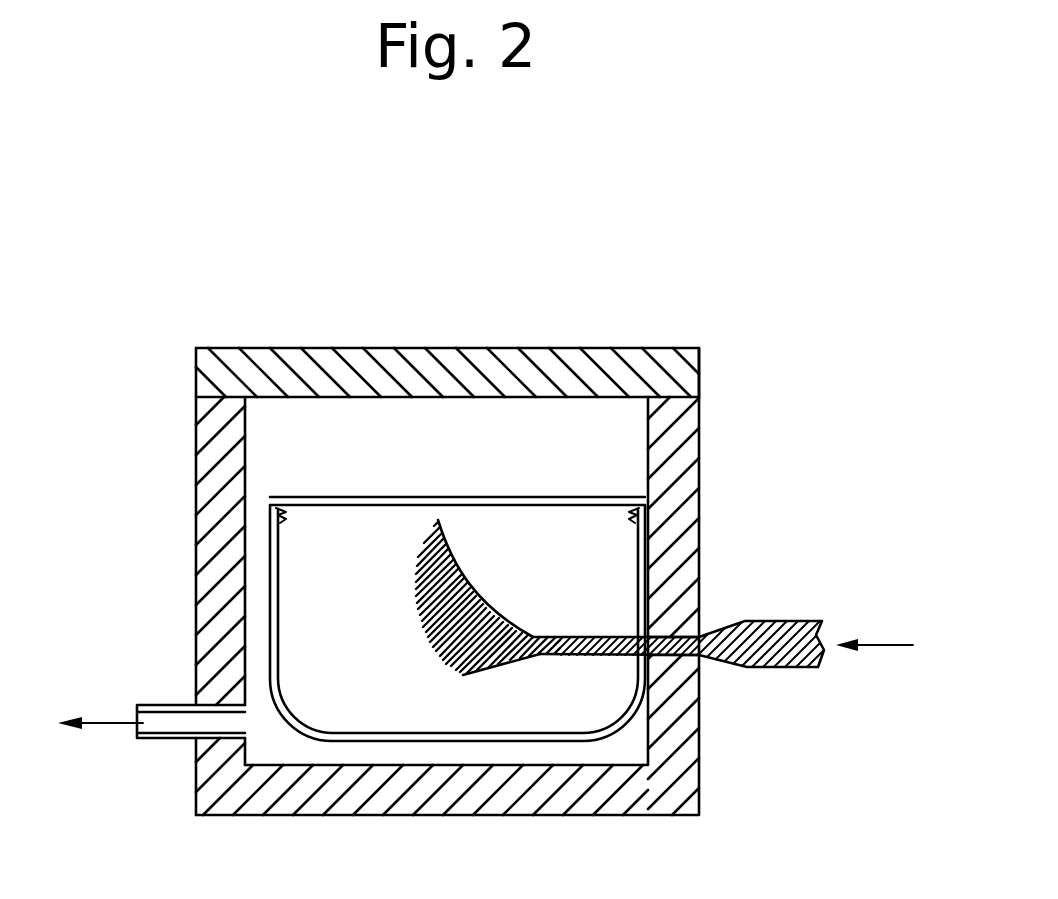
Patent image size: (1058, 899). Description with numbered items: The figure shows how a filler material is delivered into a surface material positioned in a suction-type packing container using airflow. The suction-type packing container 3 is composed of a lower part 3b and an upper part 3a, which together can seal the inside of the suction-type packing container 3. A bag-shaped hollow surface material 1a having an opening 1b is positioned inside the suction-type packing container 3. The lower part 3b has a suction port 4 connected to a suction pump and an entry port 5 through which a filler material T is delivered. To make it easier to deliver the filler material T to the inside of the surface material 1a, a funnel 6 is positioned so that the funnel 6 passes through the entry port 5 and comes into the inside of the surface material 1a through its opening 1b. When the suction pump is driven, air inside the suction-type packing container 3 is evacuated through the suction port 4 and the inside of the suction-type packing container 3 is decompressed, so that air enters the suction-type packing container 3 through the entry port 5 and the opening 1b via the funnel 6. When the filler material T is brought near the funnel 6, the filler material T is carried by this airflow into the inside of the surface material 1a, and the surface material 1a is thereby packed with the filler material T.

The surface material 1a is at (433, 742).
The opening 1b is at (615, 637).
The suction-type packing container 3 is at (403, 532).
The upper part 3a is at (210, 380).
The lower part 3b is at (212, 500).
The suction port 4 is at (165, 723).
The entry port 5 is at (707, 632).
The funnel 6 is at (718, 660).
The filler material T is at (827, 662).